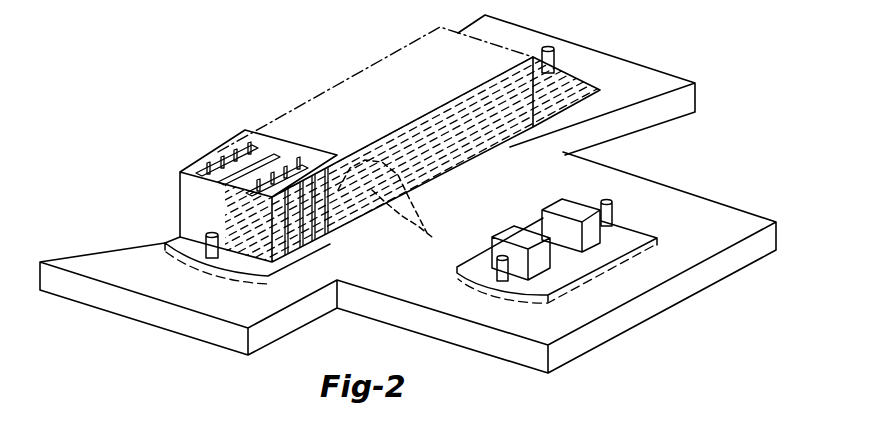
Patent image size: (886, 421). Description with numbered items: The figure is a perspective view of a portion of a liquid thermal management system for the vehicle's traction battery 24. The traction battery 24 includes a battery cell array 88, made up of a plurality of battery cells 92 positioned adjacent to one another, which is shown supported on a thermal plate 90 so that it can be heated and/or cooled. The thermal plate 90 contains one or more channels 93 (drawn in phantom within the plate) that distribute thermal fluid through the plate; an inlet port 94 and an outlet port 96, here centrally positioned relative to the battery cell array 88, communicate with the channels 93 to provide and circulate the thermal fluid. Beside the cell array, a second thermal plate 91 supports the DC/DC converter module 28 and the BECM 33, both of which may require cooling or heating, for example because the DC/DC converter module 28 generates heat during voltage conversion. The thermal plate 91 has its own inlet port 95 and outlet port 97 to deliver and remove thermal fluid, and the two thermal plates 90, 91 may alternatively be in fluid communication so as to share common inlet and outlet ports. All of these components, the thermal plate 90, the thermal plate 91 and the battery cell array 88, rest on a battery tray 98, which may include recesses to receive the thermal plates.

The traction battery 24 is at (291, 80).
The DC/DC converter module 28 is at (512, 232).
The BECM 33 is at (562, 203).
The battery cell array 88 is at (387, 50).
The thermal plate 90 is at (255, 265).
The thermal plate 91 is at (575, 270).
The battery cells 92 is at (230, 147).
The channels 93 is at (428, 233).
The inlet port 94 is at (556, 60).
The inlet port 95 is at (610, 200).
The outlet port 96 is at (217, 258).
The outlet port 97 is at (497, 275).
The battery tray 98 is at (640, 80).